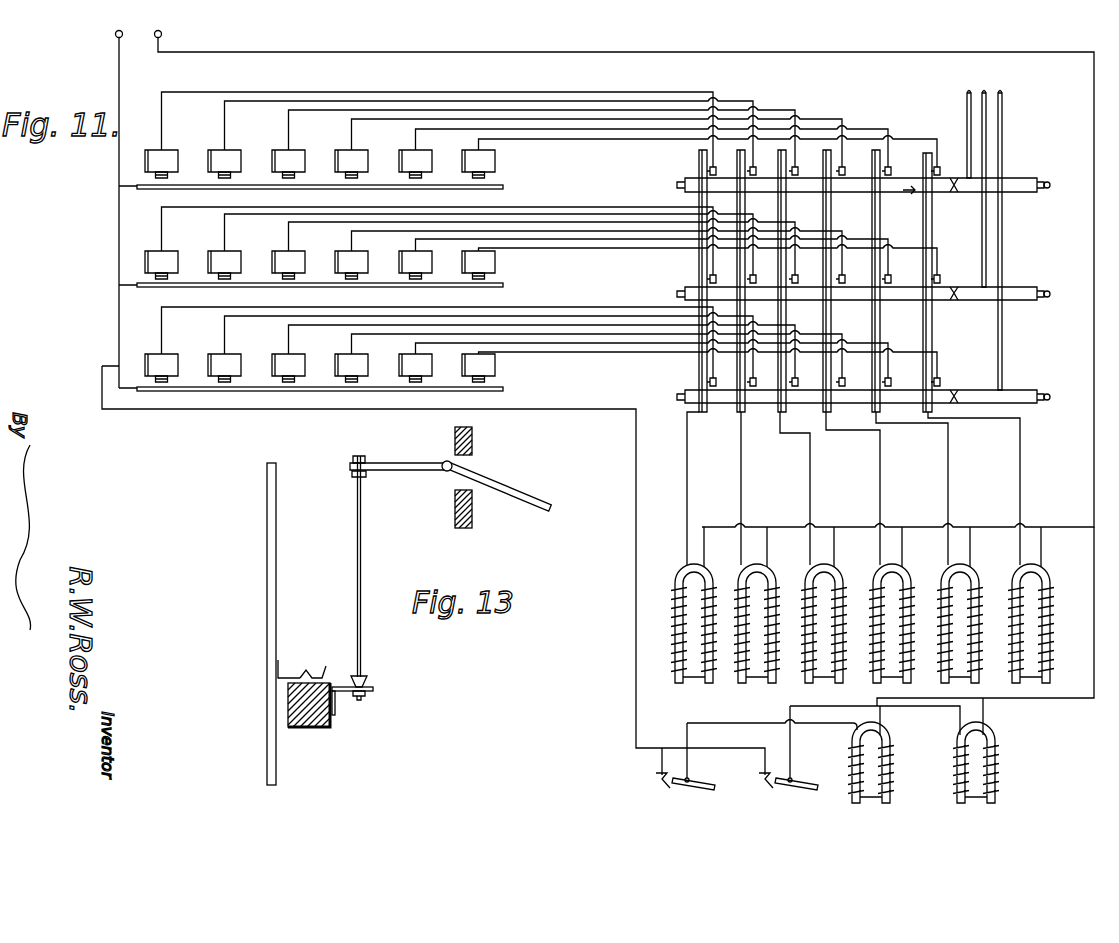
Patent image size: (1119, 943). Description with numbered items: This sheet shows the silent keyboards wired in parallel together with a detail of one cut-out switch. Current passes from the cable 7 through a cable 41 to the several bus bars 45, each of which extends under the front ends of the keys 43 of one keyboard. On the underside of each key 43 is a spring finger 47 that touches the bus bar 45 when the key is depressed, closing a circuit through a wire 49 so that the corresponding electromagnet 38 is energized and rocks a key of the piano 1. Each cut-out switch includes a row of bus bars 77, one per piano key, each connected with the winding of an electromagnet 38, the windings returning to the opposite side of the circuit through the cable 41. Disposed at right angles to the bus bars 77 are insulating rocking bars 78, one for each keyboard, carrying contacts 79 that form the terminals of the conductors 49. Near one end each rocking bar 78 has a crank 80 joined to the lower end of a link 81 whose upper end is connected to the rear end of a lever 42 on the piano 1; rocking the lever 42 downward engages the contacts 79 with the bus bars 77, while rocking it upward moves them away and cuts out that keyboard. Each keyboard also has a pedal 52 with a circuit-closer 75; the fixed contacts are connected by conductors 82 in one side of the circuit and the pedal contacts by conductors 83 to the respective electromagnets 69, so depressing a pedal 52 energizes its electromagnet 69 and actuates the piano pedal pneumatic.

In FIG. 13, the piano 1 is at (472, 508).
In FIG. 11, the cable 7 is at (139, 26).
In FIG. 11, the electromagnet 38 is at (686, 568).
In FIG. 11, the cable 41 is at (119, 88).
In FIG. 13, the switch lever 42 is at (450, 486).
In FIG. 11, the key 43 is at (300, 150).
In FIG. 11, the bus bar 45 is at (503, 188).
In FIG. 11, the spring finger 47 is at (485, 178).
In FIG. 11, the wire 49 is at (352, 148).
In FIG. 13, the wire 49 is at (330, 667).
In FIG. 11, the pedal 52 is at (712, 792).
In FIG. 11, the electromagnet 69 is at (935, 762).
In FIG. 11, the pedal circuit-closer 75 is at (721, 770).
In FIG. 11, the bus bar 77 is at (699, 262).
In FIG. 13, the bus bar 77 is at (267, 600).
In FIG. 11, the rocking bar 78 is at (700, 477).
In FIG. 13, the rocking bar 78 is at (322, 727).
In FIG. 11, the contact 79 is at (770, 412).
In FIG. 13, the contact 79 is at (286, 676).
In FIG. 13, the crank 80 is at (373, 690).
In FIG. 11, the link 81 is at (1000, 140).
In FIG. 13, the link 81 is at (357, 600).
In FIG. 11, the conductor 82 is at (636, 684).
In FIG. 11, the conductor 83 is at (836, 726).